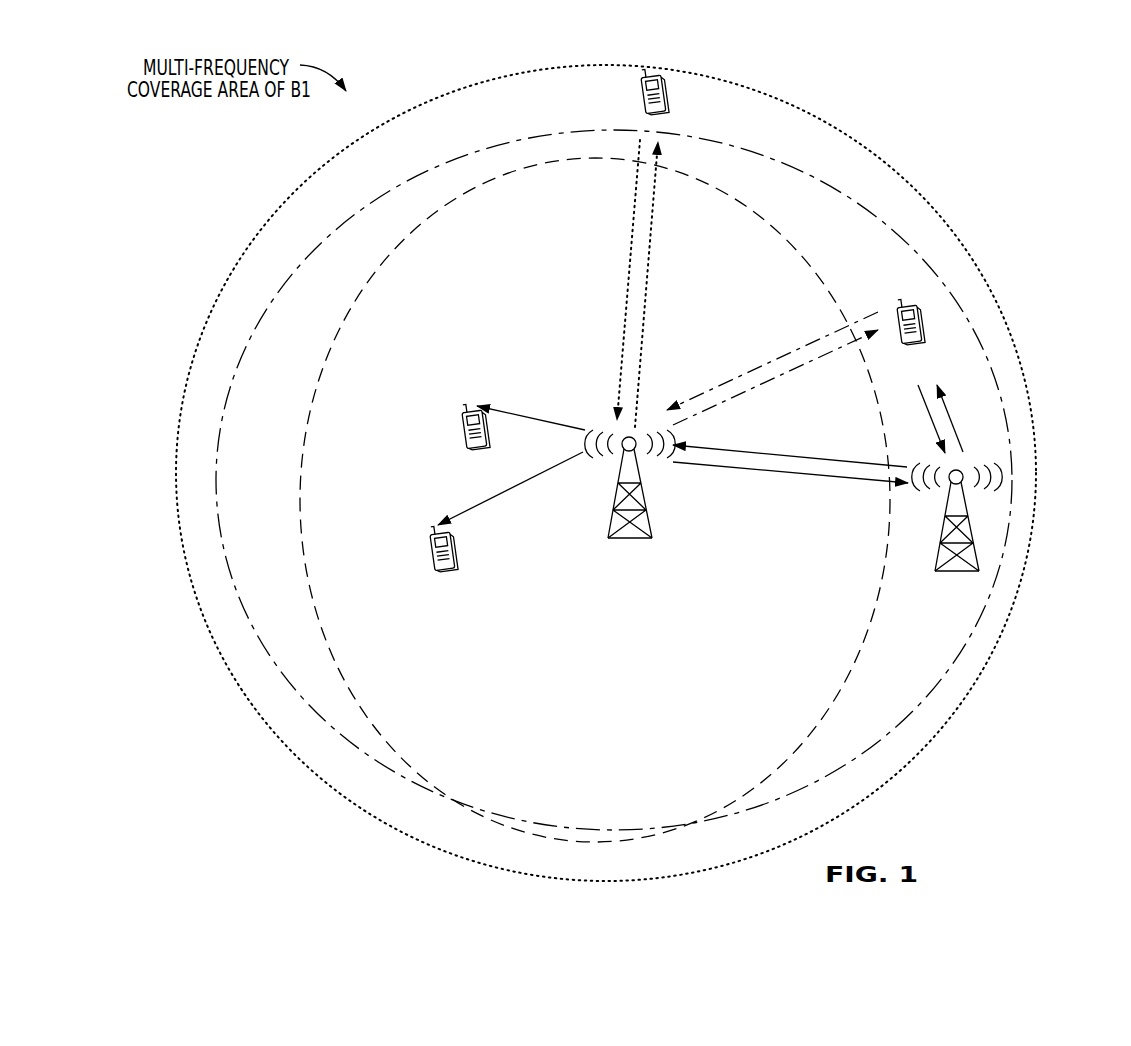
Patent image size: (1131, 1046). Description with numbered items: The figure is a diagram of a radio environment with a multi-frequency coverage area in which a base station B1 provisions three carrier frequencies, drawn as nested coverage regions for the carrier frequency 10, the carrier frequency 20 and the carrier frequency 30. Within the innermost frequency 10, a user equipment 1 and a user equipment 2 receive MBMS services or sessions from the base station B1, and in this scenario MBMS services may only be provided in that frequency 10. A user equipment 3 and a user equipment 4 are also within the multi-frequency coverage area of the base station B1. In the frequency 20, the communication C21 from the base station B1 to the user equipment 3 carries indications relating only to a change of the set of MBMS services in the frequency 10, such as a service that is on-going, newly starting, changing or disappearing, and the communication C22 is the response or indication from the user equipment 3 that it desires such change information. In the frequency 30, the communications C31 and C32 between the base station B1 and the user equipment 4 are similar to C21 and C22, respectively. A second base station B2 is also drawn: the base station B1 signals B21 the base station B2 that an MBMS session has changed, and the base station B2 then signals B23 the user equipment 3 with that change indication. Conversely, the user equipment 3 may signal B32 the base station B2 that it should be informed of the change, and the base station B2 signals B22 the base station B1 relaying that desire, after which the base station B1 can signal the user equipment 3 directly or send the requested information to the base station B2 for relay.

The user equipment UE1 1 is at (460, 429).
The user equipment UE2 2 is at (429, 554).
The user equipment UE3 3 is at (923, 323).
The user equipment UE4 4 is at (641, 91).
The carrier frequency FREQ10 10 is at (828, 645).
The carrier frequency FREQ20 20 is at (883, 262).
The carrier frequency FREQ30 30 is at (840, 147).
The base station B1 is at (618, 496).
The base station B2 is at (944, 528).
The signaling from base station B1 to base station B2 B21 is at (727, 468).
The signaling from base station B2 to base station B1 B22 is at (783, 456).
The signaling from base station B2 to UE3 B23 is at (922, 408).
The signaling from UE3 to base station B2 B32 is at (954, 431).
The communication C21 from base station B1 to UE3 C21 is at (735, 400).
The communication C22 from UE3 to base station B1 C22 is at (822, 338).
The communication C31 from base station B1 to UE4 C31 is at (642, 333).
The communication C32 from UE4 to base station B1 C32 is at (633, 225).